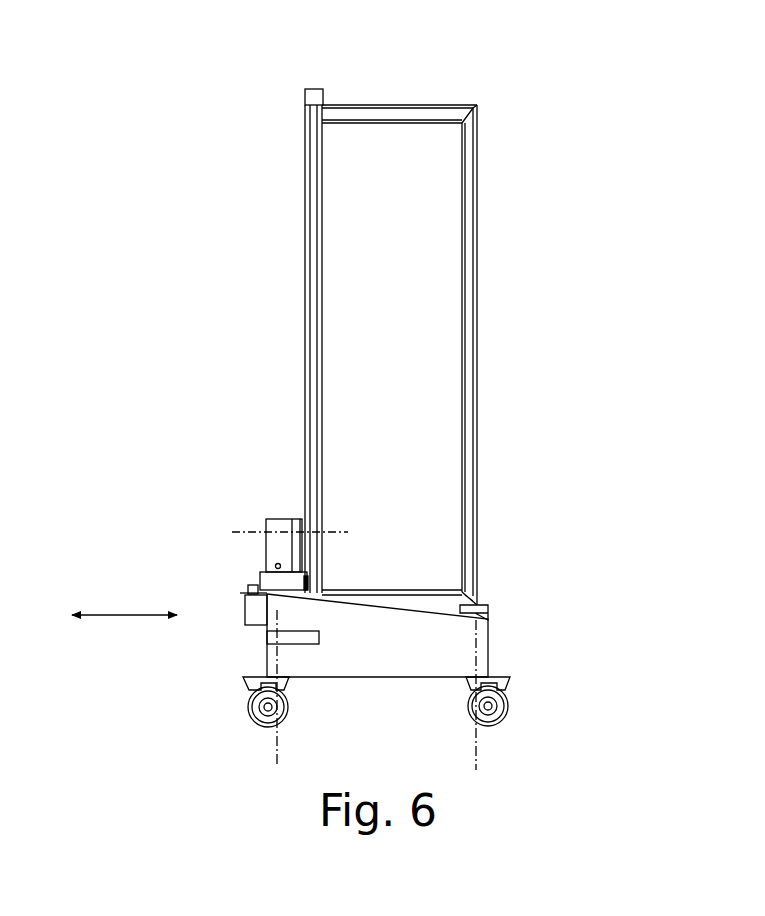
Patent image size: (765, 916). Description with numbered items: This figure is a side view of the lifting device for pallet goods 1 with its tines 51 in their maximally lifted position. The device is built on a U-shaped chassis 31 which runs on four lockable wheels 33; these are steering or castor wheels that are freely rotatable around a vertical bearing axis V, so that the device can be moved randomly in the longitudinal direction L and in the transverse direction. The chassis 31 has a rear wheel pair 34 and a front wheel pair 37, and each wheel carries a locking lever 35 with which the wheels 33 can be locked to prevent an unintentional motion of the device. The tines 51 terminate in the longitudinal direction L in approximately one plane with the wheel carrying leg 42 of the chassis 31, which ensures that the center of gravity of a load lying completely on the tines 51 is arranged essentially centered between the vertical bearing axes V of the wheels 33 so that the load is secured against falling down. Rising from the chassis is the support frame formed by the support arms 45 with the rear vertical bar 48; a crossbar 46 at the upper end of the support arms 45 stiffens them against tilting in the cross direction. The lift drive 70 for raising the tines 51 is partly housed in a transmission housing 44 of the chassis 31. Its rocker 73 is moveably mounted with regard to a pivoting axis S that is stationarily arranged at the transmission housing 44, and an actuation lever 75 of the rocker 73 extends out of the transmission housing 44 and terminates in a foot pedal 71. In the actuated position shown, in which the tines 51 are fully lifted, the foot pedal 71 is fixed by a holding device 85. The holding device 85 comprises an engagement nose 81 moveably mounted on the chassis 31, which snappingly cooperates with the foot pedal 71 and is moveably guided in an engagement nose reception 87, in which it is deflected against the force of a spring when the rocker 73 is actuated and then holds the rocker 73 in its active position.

The lifting device for pallet goods 1 is at (268, 188).
The chassis 31 is at (495, 646).
The lockable wheels 33 is at (262, 738).
The rear wheel pair 34 is at (250, 700).
The locking levers 35 is at (250, 680).
The front wheel pair 37 is at (512, 702).
The wheel supporting leg 42 is at (373, 660).
The transmission housing 44 is at (279, 518).
The support arms 45 is at (470, 232).
The crossbar 46 is at (302, 86).
The rear vertical bar 48 is at (313, 280).
The tines 51 is at (489, 602).
The lift drive 70 is at (223, 458).
The foot pedal 71 is at (282, 578).
The rocker 73 is at (295, 530).
The actuation lever 75 is at (306, 558).
The engagement nose 81 is at (245, 580).
The holding device 85 is at (175, 542).
The engagement nose reception 87 is at (245, 615).
The pivoting axis S is at (243, 528).
The longitudinal direction L is at (126, 614).
The vertical bearing axis V is at (284, 745).